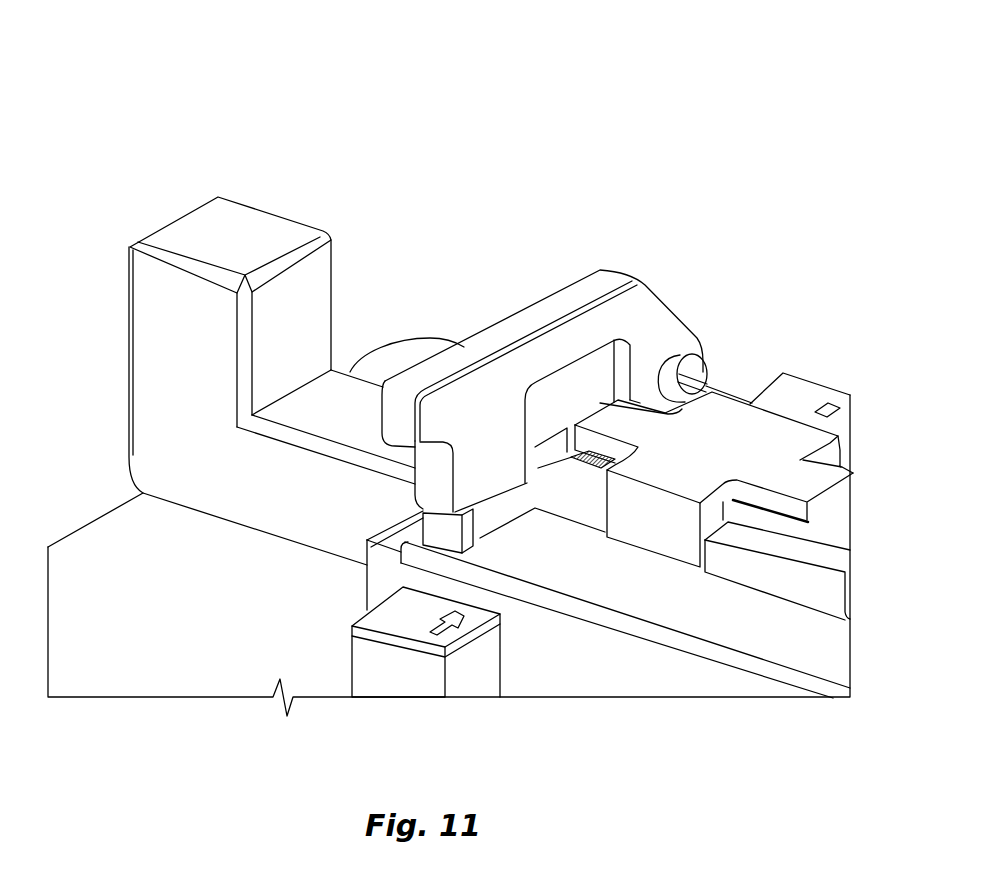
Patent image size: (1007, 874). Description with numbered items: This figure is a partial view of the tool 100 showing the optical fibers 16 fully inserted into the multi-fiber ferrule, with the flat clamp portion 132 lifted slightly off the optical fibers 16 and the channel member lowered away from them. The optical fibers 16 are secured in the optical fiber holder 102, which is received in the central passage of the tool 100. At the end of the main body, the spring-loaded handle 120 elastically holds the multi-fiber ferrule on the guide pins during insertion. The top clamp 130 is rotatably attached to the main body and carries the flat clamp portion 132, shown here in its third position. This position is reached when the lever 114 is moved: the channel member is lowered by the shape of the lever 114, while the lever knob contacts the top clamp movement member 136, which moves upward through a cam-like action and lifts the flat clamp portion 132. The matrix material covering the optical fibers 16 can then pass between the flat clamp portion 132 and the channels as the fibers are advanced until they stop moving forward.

The tool 100 is at (523, 137).
The handle 120 is at (242, 210).
The top clamp 130 is at (622, 272).
The top clamp movement member 136 is at (437, 523).
The flat clamp portion 132 is at (535, 510).
The optical fibers 16 is at (586, 466).
The optical fiber holder 102 is at (782, 553).
The lever 114 is at (363, 665).